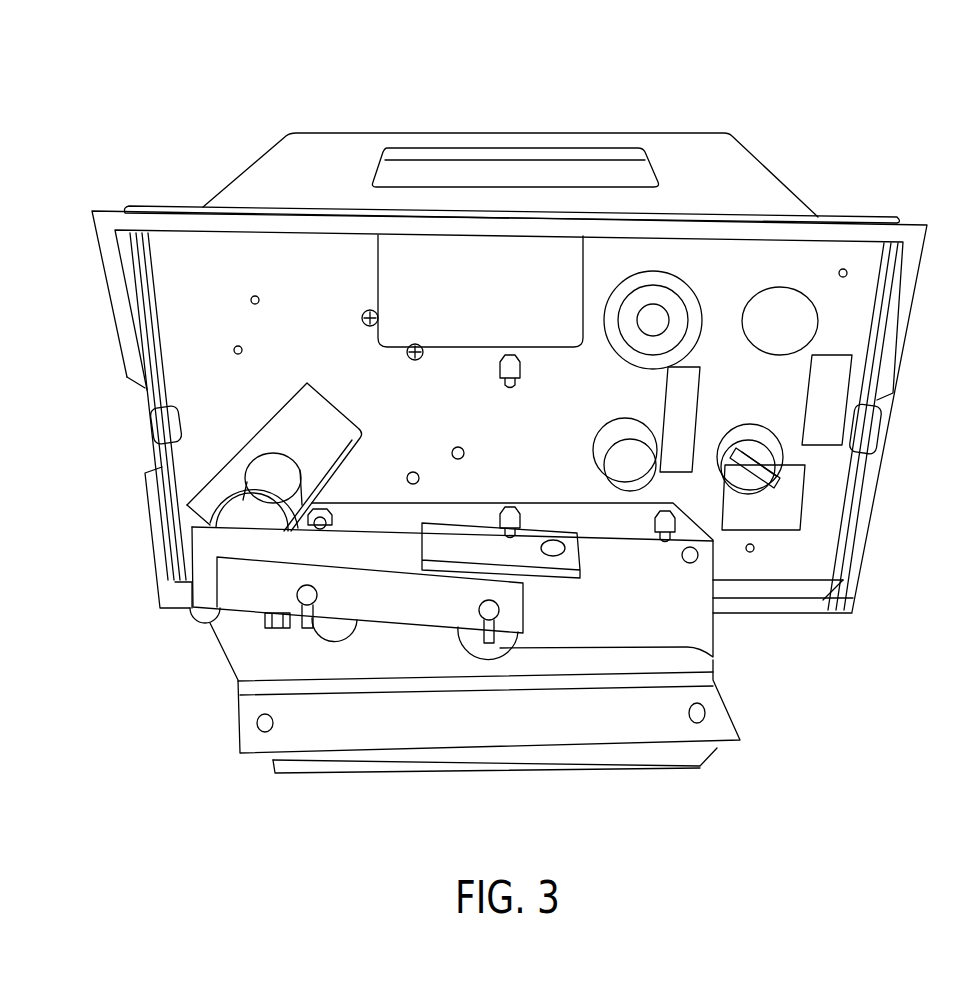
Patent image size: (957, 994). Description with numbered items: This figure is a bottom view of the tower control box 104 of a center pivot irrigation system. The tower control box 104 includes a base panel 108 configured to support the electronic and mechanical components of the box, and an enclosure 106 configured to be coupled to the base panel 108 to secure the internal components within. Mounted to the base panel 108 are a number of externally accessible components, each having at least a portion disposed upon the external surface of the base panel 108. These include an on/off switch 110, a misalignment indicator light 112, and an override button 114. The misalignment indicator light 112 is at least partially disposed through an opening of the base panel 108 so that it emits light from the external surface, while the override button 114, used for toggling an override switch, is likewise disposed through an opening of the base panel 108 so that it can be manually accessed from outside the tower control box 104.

The tower control box 104 is at (143, 69).
The enclosure 106 is at (763, 181).
The base panel 108 is at (173, 342).
The on/off switch 110 is at (763, 487).
The misalignment indicator light 112 is at (656, 318).
The override button 114 is at (630, 476).